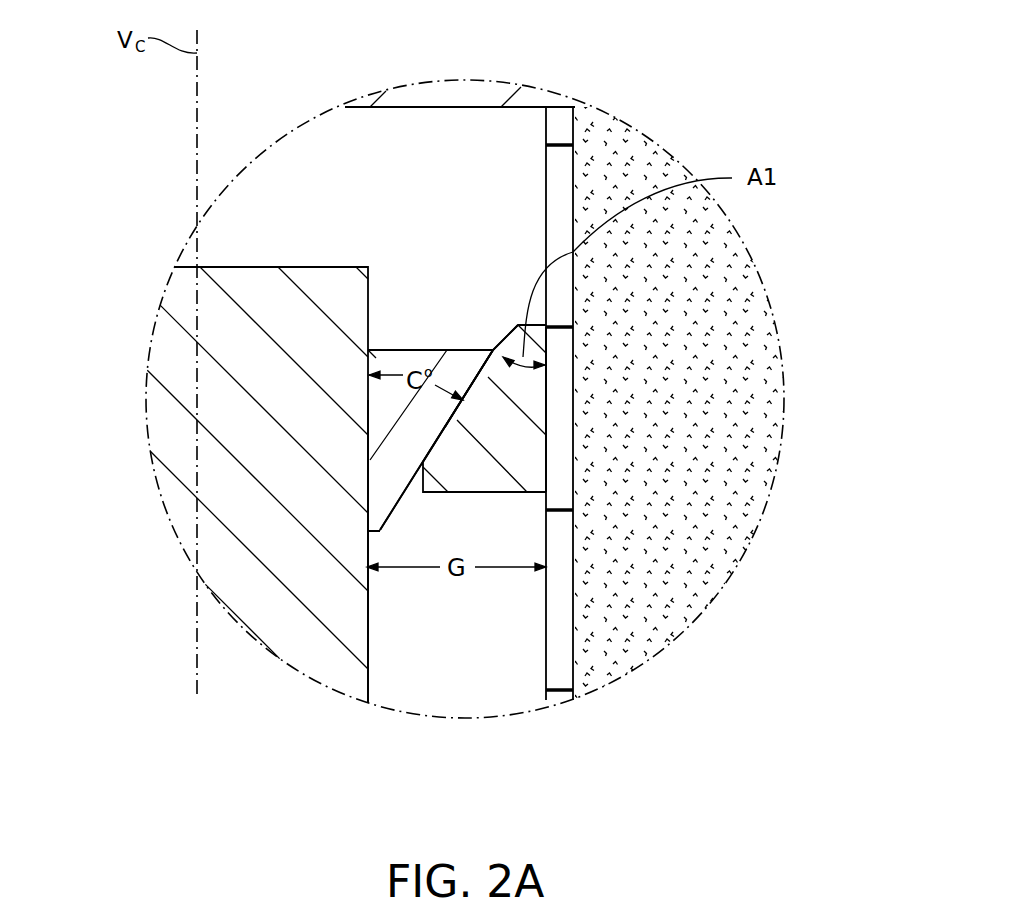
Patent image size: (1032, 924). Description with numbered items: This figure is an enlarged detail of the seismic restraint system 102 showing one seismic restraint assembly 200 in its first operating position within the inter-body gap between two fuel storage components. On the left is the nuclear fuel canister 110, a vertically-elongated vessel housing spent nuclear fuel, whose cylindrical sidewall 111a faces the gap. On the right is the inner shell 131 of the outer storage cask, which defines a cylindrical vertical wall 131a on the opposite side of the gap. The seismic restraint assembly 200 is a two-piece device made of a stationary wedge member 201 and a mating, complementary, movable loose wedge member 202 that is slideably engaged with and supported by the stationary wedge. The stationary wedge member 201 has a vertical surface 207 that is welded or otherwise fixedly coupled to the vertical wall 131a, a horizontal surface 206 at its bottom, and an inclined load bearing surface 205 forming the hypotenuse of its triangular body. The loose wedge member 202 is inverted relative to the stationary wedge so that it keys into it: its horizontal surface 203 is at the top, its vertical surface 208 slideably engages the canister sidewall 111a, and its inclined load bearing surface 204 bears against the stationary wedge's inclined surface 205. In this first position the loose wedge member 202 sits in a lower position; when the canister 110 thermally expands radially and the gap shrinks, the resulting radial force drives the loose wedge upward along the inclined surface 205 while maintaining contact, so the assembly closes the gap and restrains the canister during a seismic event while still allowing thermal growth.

The seismic restraint system 102 is at (449, 233).
The canister 110 is at (268, 352).
The cylindrical sidewall 111a is at (368, 678).
The inner shell 131 is at (563, 413).
The cylindrical vertical wall 131a is at (543, 655).
The seismic restraint assembly 200 is at (408, 292).
The stationary wedge member 201 is at (527, 440).
The movable loose wedge member 202 is at (463, 363).
The horizontal surface 203 is at (455, 347).
The inclined load bearing surface 204 is at (478, 400).
The inclined load bearing surface 205 is at (433, 445).
The horizontal surface 206 is at (433, 497).
The vertical surface 207 is at (552, 382).
The vertical surface 208 is at (367, 478).